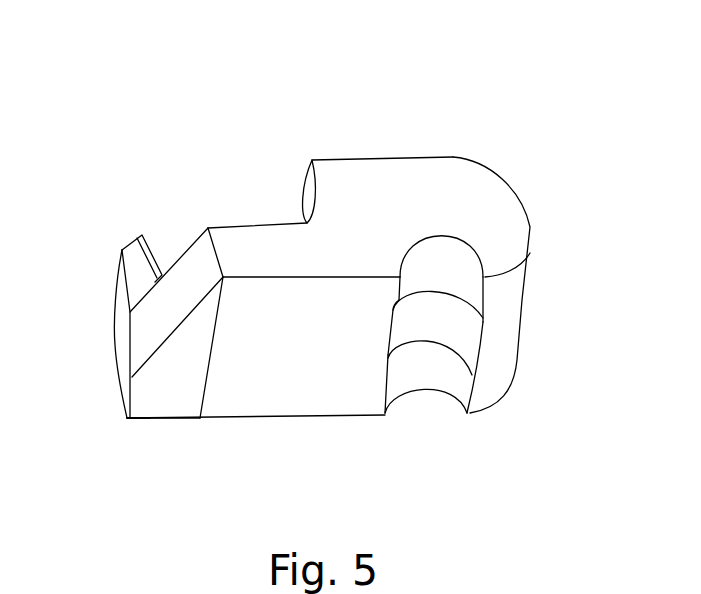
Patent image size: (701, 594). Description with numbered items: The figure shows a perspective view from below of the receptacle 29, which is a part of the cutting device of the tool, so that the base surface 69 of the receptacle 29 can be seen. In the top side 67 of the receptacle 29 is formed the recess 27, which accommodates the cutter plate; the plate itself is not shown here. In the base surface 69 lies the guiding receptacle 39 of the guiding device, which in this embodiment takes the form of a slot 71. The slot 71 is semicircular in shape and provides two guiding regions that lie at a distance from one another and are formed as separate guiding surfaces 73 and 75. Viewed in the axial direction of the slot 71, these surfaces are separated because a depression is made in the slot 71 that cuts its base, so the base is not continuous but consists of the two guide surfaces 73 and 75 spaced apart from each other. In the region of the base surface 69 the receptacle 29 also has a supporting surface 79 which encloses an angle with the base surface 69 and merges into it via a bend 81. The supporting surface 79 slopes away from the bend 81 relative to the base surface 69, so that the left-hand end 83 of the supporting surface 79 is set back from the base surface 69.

The recess 27 is at (265, 200).
The top side 67 is at (347, 157).
The receptacle 29 is at (452, 166).
The slot 71 is at (447, 240).
The guiding surface 73 is at (448, 277).
The guiding surface 75 is at (437, 373).
The guiding receptacle 39 is at (425, 404).
The base surface 69 is at (263, 363).
The bend 81 is at (197, 410).
The supporting surface 79 is at (148, 407).
The left-hand end 83 is at (122, 408).